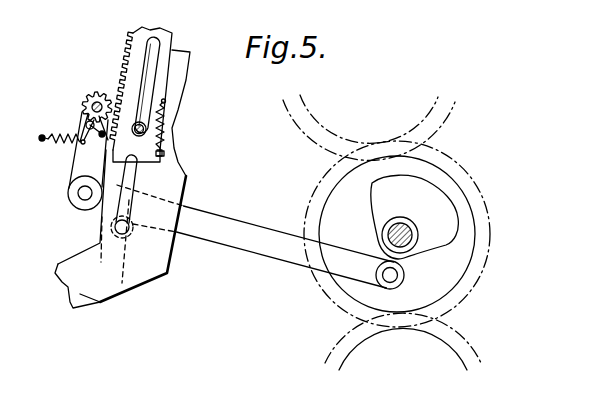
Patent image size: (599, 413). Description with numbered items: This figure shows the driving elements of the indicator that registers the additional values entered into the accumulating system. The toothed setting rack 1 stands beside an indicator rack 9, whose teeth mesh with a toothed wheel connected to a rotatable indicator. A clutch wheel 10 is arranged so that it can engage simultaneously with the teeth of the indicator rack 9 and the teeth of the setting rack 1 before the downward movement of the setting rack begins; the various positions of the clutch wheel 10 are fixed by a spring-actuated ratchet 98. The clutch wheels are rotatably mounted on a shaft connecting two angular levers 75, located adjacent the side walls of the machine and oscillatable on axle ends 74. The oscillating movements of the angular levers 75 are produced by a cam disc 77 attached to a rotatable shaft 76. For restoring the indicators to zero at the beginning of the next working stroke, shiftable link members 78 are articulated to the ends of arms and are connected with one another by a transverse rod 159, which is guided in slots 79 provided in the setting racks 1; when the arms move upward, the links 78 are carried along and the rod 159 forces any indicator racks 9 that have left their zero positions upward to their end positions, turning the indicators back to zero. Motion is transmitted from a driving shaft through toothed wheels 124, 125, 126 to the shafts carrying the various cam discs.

The setting rack 1 is at (132, 287).
The indicator rack 9 is at (135, 57).
The clutch wheel 10 is at (97, 92).
The axle ends 74 is at (80, 197).
The angular levers 75 is at (87, 162).
The rotatable shaft 76 is at (387, 230).
The cam disc 77 is at (447, 213).
The shiftable link members 78 is at (87, 303).
The slots 79 is at (135, 179).
The spring-actuated ratchet 98 is at (84, 125).
The toothed wheel 124 is at (473, 340).
The toothed wheel 125 is at (460, 308).
The toothed wheel 126 is at (445, 123).
The transverse rod 159 is at (165, 123).